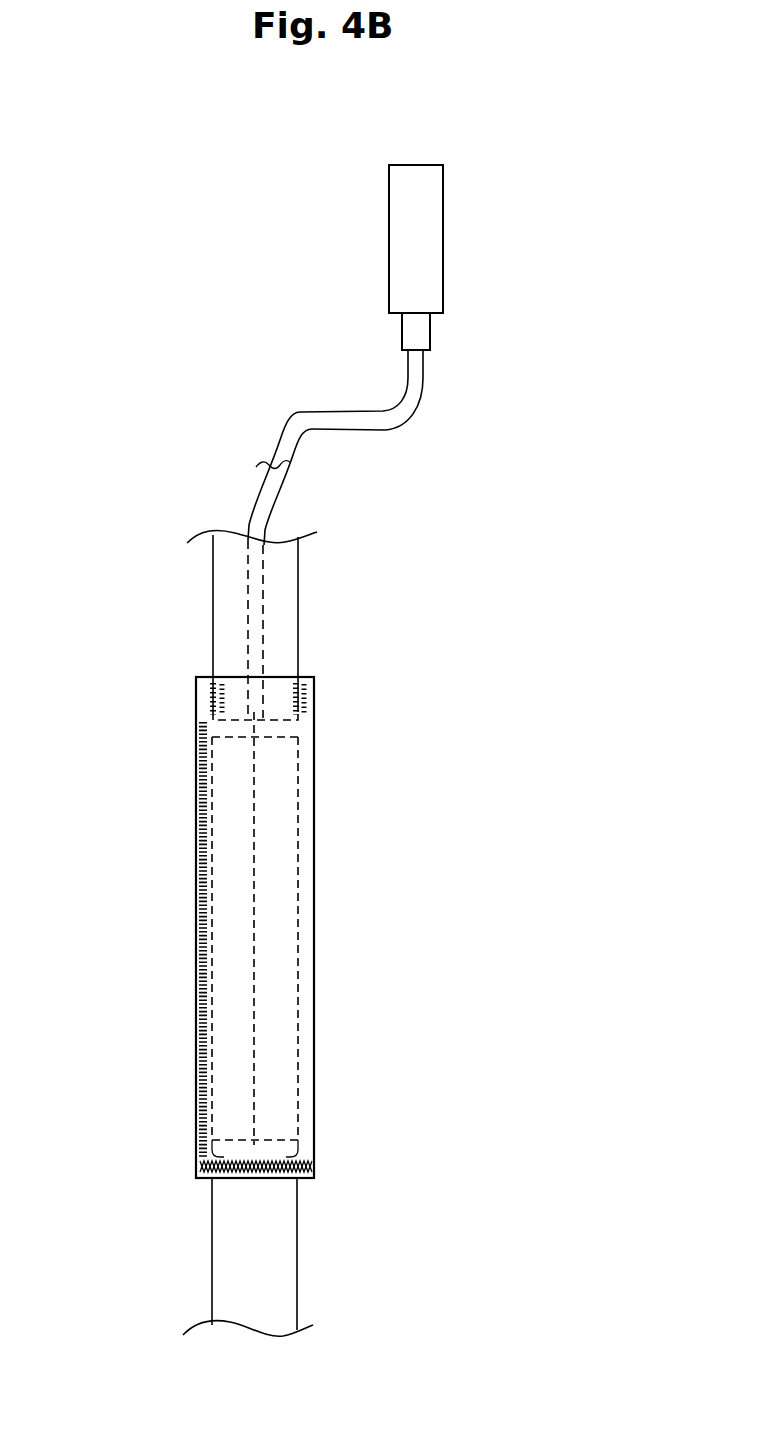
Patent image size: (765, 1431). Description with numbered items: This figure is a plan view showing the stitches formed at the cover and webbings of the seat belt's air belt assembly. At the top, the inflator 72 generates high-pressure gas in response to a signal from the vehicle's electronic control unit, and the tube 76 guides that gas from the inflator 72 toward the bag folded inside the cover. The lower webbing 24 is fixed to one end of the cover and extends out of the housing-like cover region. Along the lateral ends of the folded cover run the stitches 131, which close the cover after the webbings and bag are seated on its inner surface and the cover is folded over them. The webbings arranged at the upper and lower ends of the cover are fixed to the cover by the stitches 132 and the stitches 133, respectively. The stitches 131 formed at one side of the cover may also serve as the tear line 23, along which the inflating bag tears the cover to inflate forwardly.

The inflator 72 is at (443, 235).
The tube 76 is at (380, 418).
The lower webbing 24 is at (265, 1262).
The stitches 131 is at (194, 1052).
The stitches 132 is at (205, 697).
The tear line 23 is at (253, 942).
The stitches 133 is at (310, 1165).